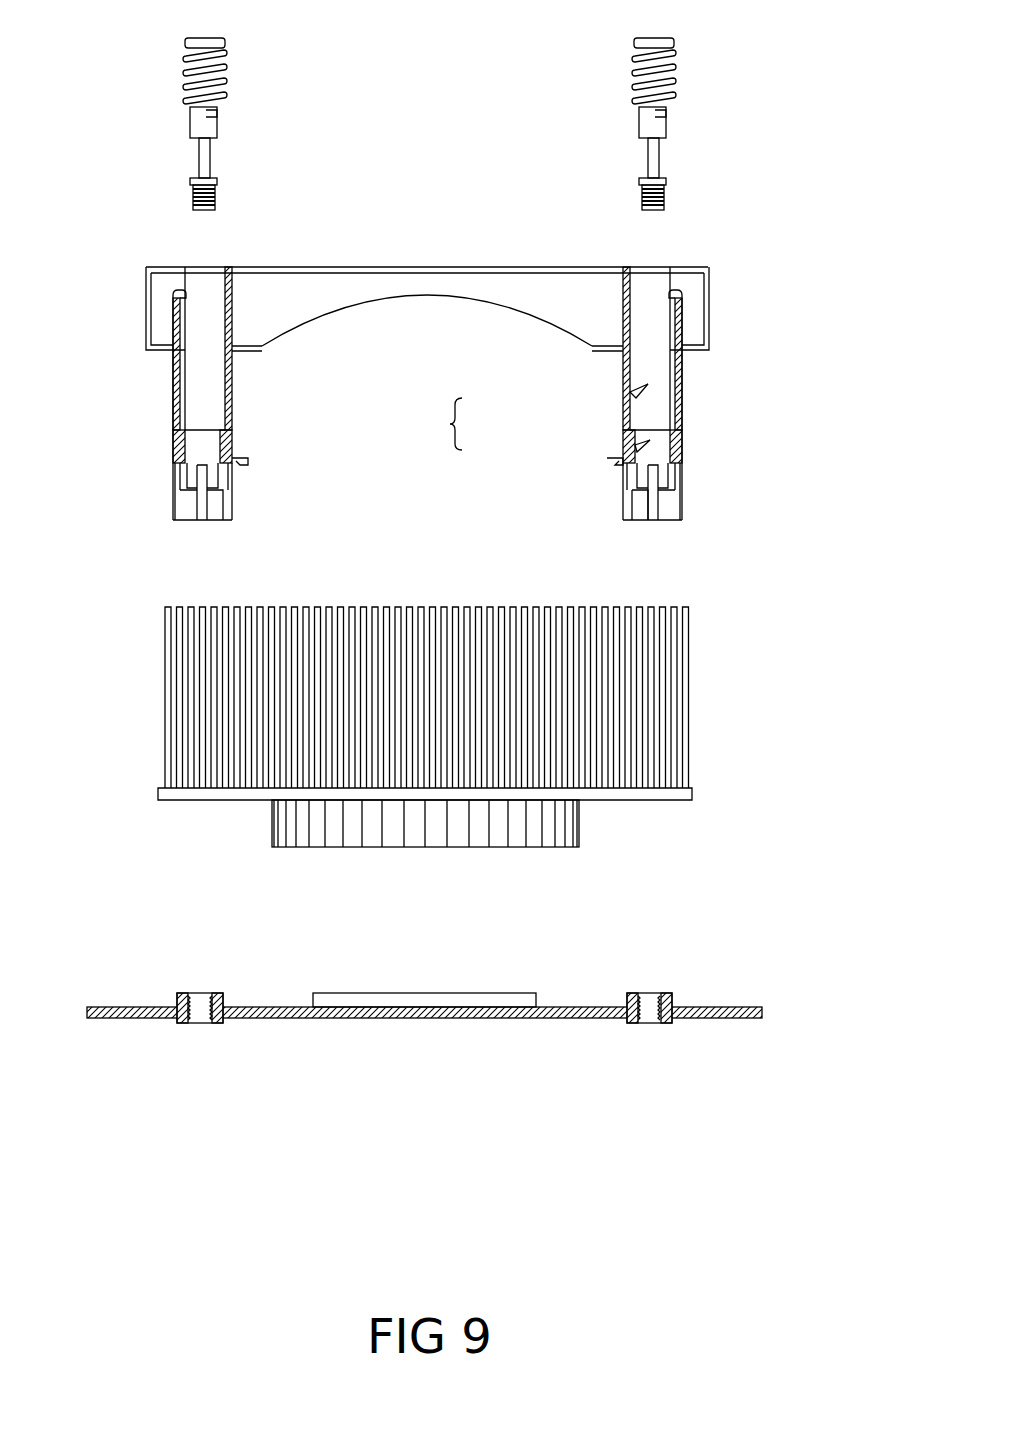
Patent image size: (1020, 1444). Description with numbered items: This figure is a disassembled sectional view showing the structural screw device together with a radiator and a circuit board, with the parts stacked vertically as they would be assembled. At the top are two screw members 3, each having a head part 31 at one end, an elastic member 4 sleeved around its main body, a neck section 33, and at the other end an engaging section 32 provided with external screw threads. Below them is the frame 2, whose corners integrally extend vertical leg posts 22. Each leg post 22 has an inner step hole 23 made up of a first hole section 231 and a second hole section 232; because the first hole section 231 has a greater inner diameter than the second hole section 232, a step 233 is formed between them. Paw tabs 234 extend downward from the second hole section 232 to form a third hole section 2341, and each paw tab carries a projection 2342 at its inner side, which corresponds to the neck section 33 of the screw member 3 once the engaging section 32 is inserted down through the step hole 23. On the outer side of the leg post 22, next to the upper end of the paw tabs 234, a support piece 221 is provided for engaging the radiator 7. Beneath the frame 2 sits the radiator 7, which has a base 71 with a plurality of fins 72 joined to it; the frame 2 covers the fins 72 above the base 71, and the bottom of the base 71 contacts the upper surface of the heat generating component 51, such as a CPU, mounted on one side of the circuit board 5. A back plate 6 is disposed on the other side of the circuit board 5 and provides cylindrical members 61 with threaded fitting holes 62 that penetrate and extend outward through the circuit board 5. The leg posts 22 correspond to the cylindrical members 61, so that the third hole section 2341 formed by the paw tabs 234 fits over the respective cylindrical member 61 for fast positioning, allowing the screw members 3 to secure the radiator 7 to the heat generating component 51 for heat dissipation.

The frame 2 is at (475, 392).
The leg post 22 is at (682, 368).
The support piece 221 is at (240, 462).
The step hole 23 is at (450, 424).
The first hole section 231 is at (645, 388).
The second hole section 232 is at (645, 445).
The step 233 is at (672, 425).
The paw tabs 234 is at (225, 503).
The third hole section 2341 is at (641, 506).
The projection 2342 is at (657, 518).
The screw member 3 is at (217, 117).
The head part 31 is at (215, 45).
The engaging section 32 is at (215, 205).
The neck section 33 is at (205, 160).
The elastic member 4 is at (217, 72).
The circuit board 5 is at (463, 1001).
The heat generating component 51 is at (468, 1000).
The back plate 6 is at (575, 1018).
The cylindrical members 61 is at (675, 1005).
The threaded fitting holes 62 is at (650, 1000).
The radiator 7 is at (427, 724).
The base 71 is at (560, 828).
The fins 72 is at (690, 620).